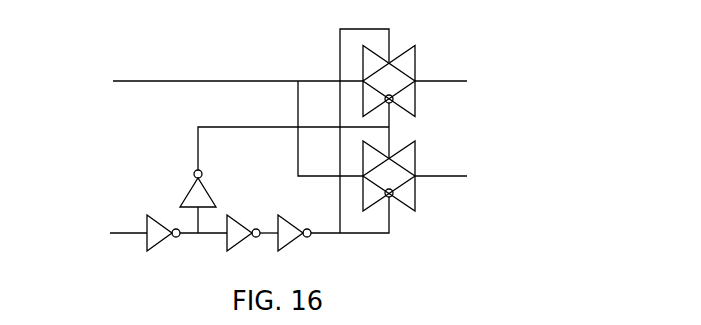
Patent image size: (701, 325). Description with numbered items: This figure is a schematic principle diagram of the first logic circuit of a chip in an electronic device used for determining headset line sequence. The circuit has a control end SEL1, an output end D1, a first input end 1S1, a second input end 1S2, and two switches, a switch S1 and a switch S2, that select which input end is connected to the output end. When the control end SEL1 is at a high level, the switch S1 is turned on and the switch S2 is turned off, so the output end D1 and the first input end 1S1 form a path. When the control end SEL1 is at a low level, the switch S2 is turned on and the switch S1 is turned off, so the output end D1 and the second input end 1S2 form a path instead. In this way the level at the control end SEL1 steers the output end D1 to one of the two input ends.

The output end D1 is at (221, 121).
The control end SEL1 is at (217, 140).
The switch S1 is at (403, 96).
The switch S2 is at (403, 169).
The first input end 1S1 is at (461, 82).
The second input end 1S2 is at (461, 177).